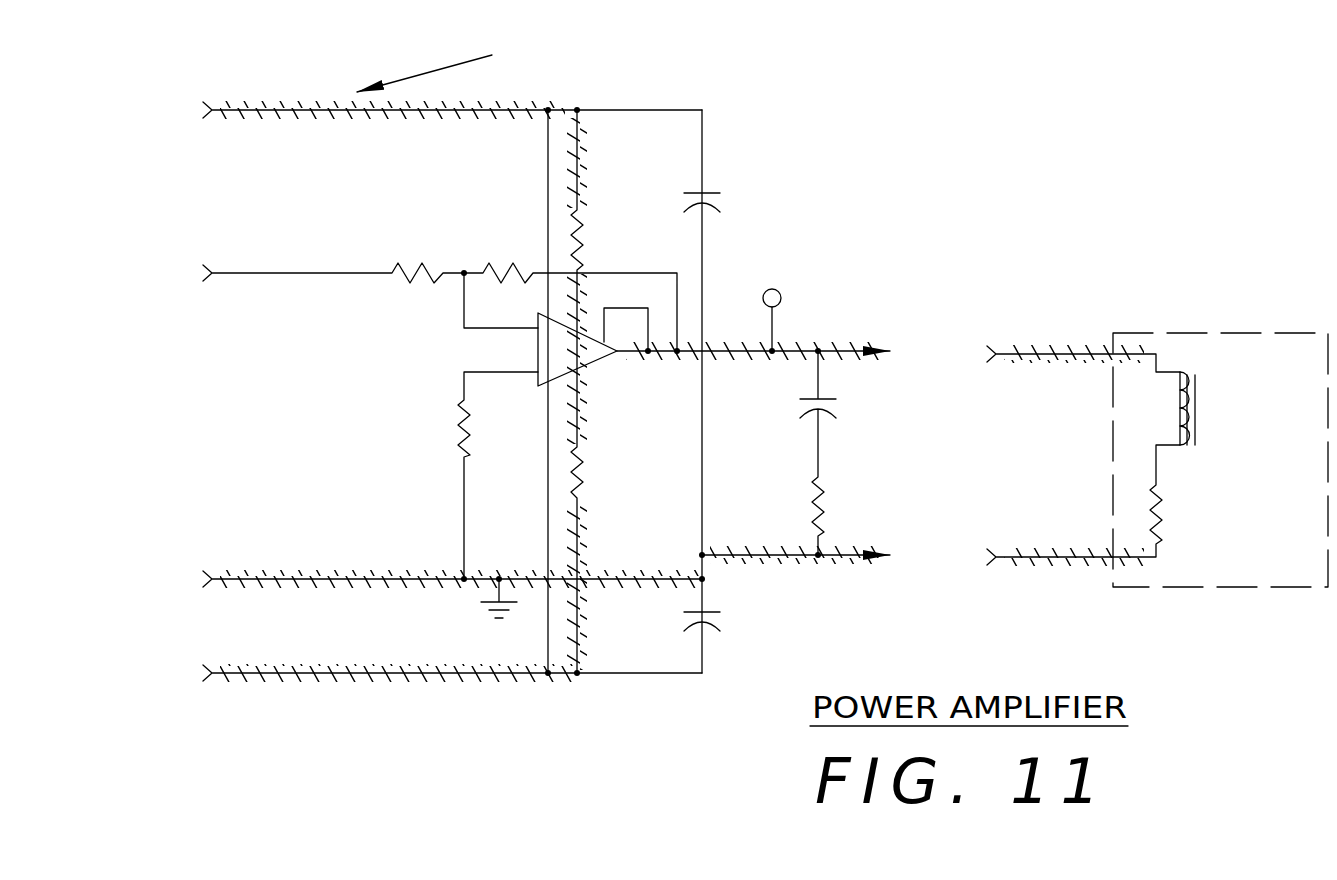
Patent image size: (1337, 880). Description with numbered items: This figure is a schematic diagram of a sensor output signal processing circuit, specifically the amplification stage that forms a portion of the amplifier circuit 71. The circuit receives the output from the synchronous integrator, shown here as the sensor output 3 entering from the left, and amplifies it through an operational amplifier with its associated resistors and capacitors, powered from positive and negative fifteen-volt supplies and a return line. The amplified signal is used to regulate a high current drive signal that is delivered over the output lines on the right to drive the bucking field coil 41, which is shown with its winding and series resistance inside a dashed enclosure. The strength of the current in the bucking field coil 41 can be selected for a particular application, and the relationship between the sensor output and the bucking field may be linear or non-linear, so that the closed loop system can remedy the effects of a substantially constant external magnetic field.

The amplifier circuit 71 is at (312, 68).
The bucking field coil 41 is at (1183, 588).
The sensor output 3 is at (276, 278).